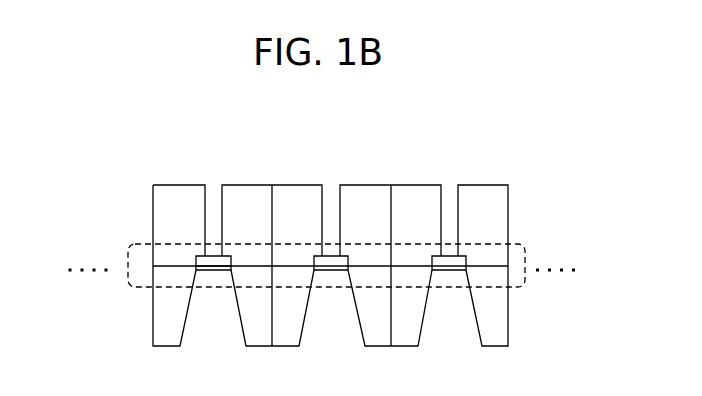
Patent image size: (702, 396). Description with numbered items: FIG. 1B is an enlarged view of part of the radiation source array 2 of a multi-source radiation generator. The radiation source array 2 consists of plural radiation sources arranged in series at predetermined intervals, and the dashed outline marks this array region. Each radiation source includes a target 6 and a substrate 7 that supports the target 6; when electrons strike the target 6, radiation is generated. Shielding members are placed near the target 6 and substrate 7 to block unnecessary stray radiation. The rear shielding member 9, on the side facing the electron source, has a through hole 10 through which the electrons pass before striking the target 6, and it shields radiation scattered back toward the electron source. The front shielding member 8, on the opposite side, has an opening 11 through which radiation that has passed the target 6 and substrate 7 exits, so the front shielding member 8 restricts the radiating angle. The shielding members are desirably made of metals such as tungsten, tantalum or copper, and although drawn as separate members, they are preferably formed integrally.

The radiation source array 2 is at (525, 247).
The target 6 is at (197, 256).
The substrate 7 is at (219, 267).
The front shielding member 8 is at (505, 320).
The rear shielding member 9 is at (504, 207).
The through hole 10 is at (449, 200).
The opening 11 is at (453, 306).